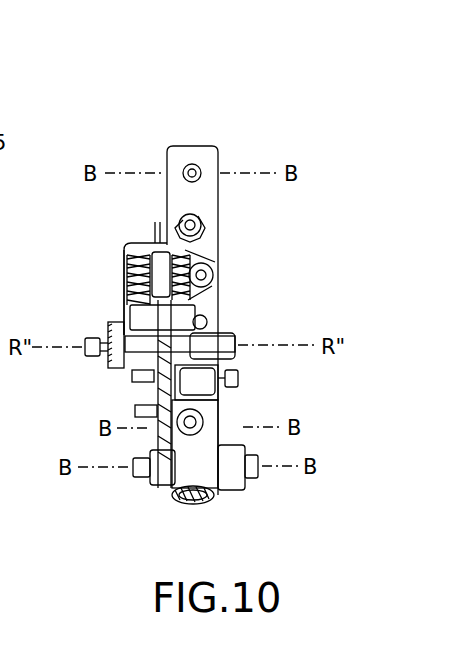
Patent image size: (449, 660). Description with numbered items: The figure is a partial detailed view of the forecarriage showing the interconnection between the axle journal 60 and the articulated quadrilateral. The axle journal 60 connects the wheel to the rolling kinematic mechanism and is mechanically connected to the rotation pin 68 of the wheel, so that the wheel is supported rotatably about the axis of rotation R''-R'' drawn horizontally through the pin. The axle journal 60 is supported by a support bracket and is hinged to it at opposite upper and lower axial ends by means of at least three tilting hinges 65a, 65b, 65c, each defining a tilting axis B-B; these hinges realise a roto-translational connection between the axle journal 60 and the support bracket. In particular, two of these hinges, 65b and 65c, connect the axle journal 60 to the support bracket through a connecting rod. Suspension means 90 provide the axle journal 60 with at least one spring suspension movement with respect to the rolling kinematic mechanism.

The tilting hinge 65a is at (207, 143).
The axle journal 60 is at (205, 203).
The rotation pin 68 is at (97, 358).
The tilting hinge 65c is at (247, 414).
The tilting hinge 65b is at (253, 484).
The suspension means 90 is at (185, 497).